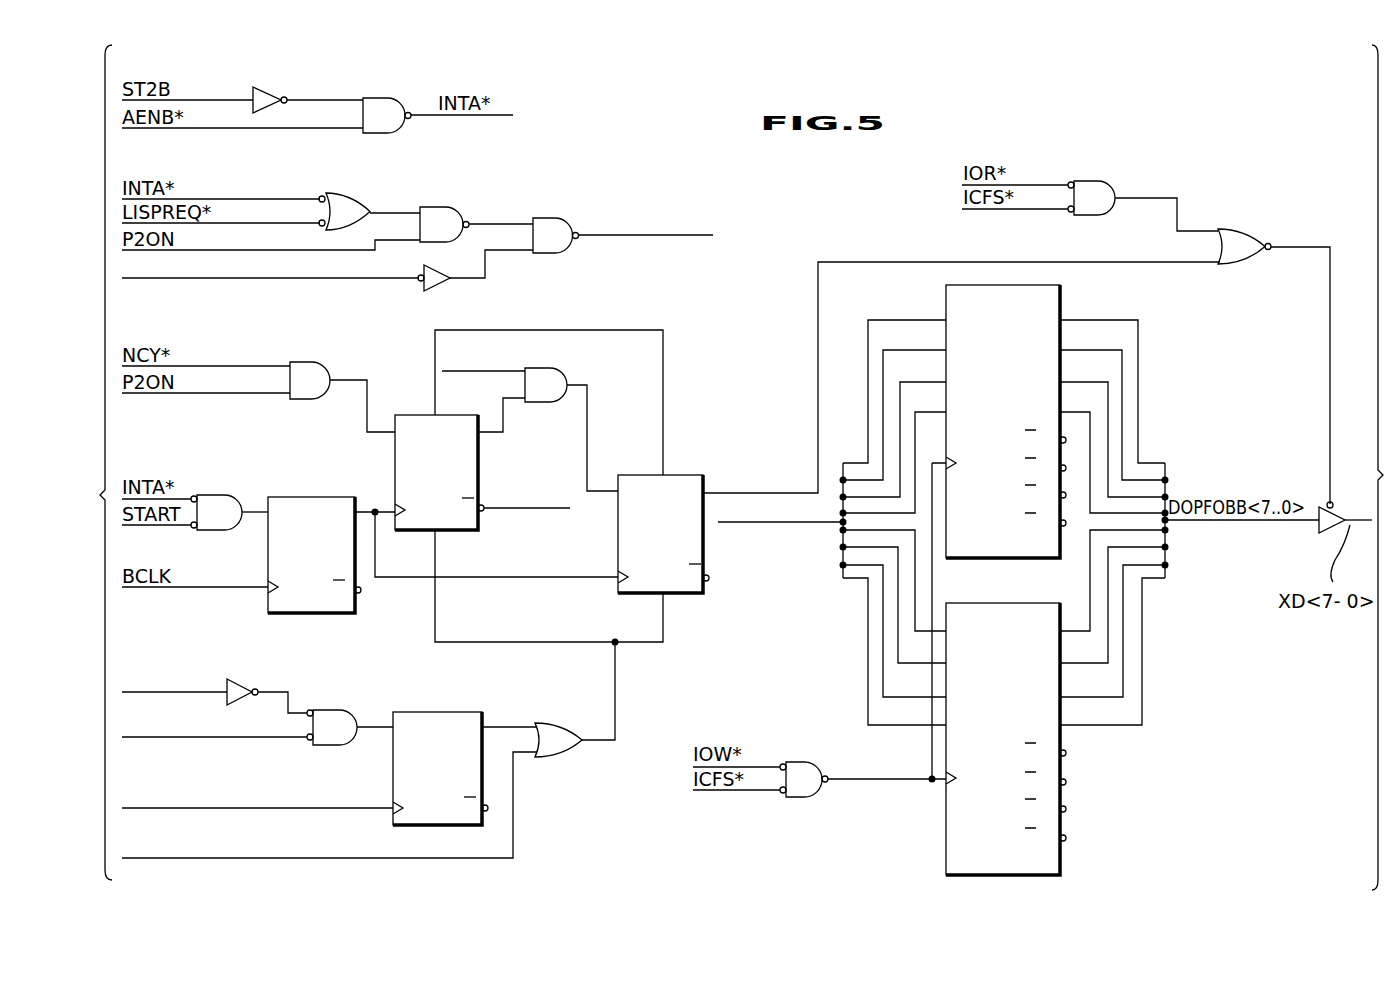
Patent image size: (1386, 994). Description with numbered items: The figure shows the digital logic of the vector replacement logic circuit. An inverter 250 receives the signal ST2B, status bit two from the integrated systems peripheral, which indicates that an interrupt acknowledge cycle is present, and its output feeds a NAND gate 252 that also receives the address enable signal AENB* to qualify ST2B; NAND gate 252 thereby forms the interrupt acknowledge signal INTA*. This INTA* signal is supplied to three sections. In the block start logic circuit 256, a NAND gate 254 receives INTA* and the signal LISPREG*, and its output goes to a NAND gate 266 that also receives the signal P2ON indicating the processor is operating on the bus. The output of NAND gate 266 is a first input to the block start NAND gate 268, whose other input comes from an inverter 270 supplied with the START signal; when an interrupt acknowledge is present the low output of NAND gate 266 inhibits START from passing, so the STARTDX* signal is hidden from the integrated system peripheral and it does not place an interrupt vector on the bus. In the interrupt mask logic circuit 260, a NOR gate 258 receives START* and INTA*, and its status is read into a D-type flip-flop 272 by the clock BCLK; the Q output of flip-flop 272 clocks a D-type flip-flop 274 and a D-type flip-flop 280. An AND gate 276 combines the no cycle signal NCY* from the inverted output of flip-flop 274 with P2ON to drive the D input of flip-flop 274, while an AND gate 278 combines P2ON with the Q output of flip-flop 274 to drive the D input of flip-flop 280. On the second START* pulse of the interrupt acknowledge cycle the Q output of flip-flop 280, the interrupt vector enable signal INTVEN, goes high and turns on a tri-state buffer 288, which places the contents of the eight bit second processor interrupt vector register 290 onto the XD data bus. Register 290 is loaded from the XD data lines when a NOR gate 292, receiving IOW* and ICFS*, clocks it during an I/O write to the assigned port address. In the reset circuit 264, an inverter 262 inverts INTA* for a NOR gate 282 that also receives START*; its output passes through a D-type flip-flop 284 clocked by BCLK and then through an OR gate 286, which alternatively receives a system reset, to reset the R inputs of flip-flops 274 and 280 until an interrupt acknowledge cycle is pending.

The inverter 250 is at (268, 92).
The NAND gate 252 is at (386, 133).
The NAND gate 254 is at (342, 192).
The block start logic circuit 256 is at (537, 163).
The NOR gate 258 is at (217, 495).
The interrupt mask logic circuit 260 is at (676, 437).
The inverter 262 is at (245, 680).
The reset circuit 264 is at (445, 866).
The NAND gate 266 is at (451, 207).
The block start NAND gate 268 is at (560, 215).
The inverter 270 is at (440, 284).
The D-type flip-flop 272 is at (315, 614).
The D-type flip-flop 274 is at (458, 532).
The AND gate 276 is at (307, 362).
The AND gate 278 is at (542, 403).
The D-type flip-flop 280 is at (690, 595).
The NOR gate 282 is at (327, 746).
The D-type flip-flop 284 is at (441, 708).
The OR gate 286 is at (560, 758).
The buffer 288 is at (1340, 508).
The second processor interrupt vector register 290 is at (1083, 773).
The NOR gate 292 is at (805, 798).